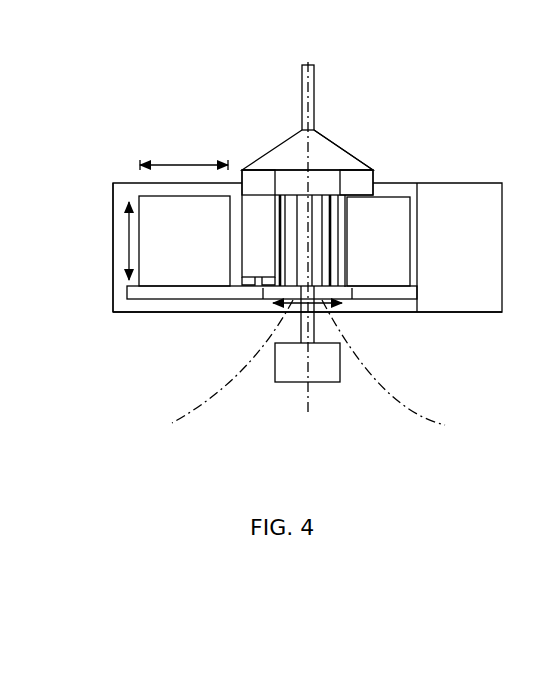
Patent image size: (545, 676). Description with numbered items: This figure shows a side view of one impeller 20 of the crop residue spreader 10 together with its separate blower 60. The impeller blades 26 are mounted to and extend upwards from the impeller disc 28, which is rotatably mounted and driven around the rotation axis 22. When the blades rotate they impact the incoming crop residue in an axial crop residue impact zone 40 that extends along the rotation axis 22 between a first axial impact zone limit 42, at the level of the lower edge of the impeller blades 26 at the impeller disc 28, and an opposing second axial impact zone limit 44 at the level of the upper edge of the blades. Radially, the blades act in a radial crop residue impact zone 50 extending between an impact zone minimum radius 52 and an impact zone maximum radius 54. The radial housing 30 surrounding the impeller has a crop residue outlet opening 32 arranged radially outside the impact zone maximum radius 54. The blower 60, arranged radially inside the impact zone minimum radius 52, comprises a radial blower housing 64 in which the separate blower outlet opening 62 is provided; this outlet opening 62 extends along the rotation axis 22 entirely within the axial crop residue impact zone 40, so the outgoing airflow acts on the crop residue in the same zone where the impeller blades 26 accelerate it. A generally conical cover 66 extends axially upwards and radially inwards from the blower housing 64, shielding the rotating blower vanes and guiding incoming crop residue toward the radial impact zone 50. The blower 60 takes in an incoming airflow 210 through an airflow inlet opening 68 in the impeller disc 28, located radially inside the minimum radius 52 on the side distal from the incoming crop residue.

The crop residue spreader 10 is at (438, 118).
The impeller 20 is at (184, 262).
The rotation axis 22 is at (308, 392).
The impeller blades 26 is at (193, 292).
The impeller disc 28 is at (232, 288).
The radial housing 30 is at (468, 280).
The crop residue outlet opening 32 is at (392, 185).
The axial crop residue impact zone 40 is at (129, 227).
The first axial impact zone limit 42 is at (122, 286).
The second axial impact zone limit 44 is at (117, 200).
The radial crop residue impact zone 50 is at (197, 165).
The impact zone minimum radius 52 is at (227, 153).
The impact zone maximum radius 54 is at (142, 158).
The blower 60 is at (333, 125).
The blower outlet opening 62 is at (302, 193).
The radial blower housing 64 is at (362, 180).
The cover 66 is at (340, 156).
The airflow inlet opening 68 is at (302, 312).
The incoming airflow 210 is at (238, 390).